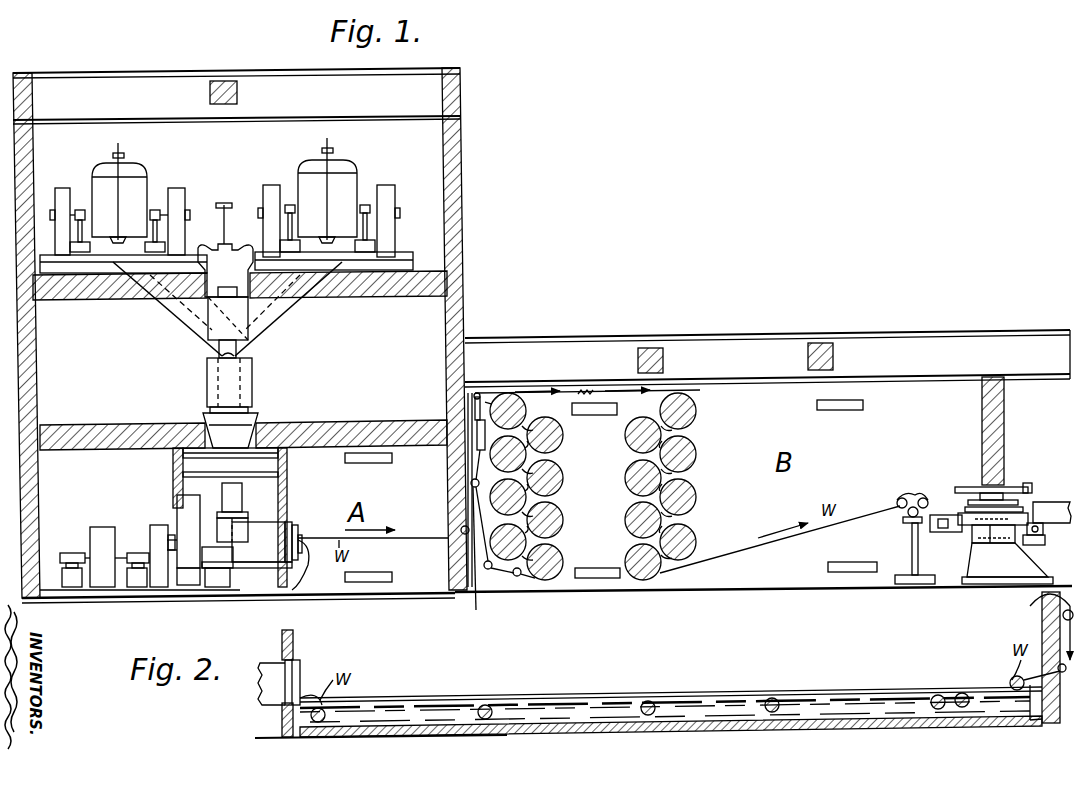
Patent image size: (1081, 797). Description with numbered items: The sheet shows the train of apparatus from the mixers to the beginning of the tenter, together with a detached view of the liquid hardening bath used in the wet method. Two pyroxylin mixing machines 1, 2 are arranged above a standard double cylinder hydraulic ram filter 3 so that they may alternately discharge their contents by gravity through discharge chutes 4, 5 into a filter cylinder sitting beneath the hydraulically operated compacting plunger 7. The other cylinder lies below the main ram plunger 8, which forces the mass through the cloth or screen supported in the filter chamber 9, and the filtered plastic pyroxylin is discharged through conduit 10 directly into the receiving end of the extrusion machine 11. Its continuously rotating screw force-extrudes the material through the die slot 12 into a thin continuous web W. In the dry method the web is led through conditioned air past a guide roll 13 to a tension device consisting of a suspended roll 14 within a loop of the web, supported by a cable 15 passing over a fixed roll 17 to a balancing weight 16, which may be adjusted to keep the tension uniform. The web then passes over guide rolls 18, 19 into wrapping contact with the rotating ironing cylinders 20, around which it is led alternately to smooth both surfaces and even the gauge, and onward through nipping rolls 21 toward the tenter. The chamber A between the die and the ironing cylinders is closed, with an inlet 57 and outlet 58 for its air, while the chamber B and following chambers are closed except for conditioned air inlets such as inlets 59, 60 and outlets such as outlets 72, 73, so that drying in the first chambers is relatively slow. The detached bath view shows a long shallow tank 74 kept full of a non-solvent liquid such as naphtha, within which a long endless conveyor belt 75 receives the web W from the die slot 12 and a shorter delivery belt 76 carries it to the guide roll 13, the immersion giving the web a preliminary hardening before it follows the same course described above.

In FIG. 1, the mixing machine 1 is at (140, 190).
In FIG. 1, the mixing machine 2 is at (305, 190).
In FIG. 1, the double cylinder hydraulic ram filter 3 is at (235, 268).
In FIG. 1, the discharge chute 4 is at (175, 320).
In FIG. 1, the discharge chute 5 is at (290, 302).
In FIG. 1, the compacting plunger 7 is at (250, 372).
In FIG. 1, the main ram plunger 8 is at (242, 347).
In FIG. 1, the filter chamber 9 is at (238, 440).
In FIG. 1, the conduit 10 is at (236, 494).
In FIG. 1, the extrusion machine 11 is at (252, 548).
In FIG. 2, the extrusion machine 11 is at (275, 700).
In FIG. 1, the die slot 12 is at (296, 585).
In FIG. 2, the die slot 12 is at (304, 675).
In FIG. 1, the guide roll 13 is at (474, 606).
In FIG. 2, the guide roll 13 is at (1048, 643).
In FIG. 1, the suspended roll 14 is at (485, 518).
In FIG. 2, the suspended roll 14 is at (1041, 657).
In FIG. 1, the cable 15 is at (466, 455).
In FIG. 1, the balancing weight 16 is at (491, 450).
In FIG. 1, the fixed roll 17 is at (488, 405).
In FIG. 1, the guide roll 18 is at (488, 570).
In FIG. 1, the guide roll 19 is at (518, 577).
In FIG. 1, the ironing cylinders 20 is at (553, 530).
In FIG. 1, the nipping rolls 21 is at (921, 532).
In FIG. 1, the inlet 57 is at (369, 582).
In FIG. 1, the outlet 58 is at (365, 463).
In FIG. 1, the inlet 59 is at (598, 578).
In FIG. 1, the inlet 60 is at (851, 572).
In FIG. 1, the outlet 72 is at (836, 410).
In FIG. 1, the outlet 73 is at (594, 415).
In FIG. 2, the tank 74 is at (648, 720).
In FIG. 2, the endless conveyor belt 75 is at (523, 703).
In FIG. 2, the delivery belt 76 is at (1012, 678).